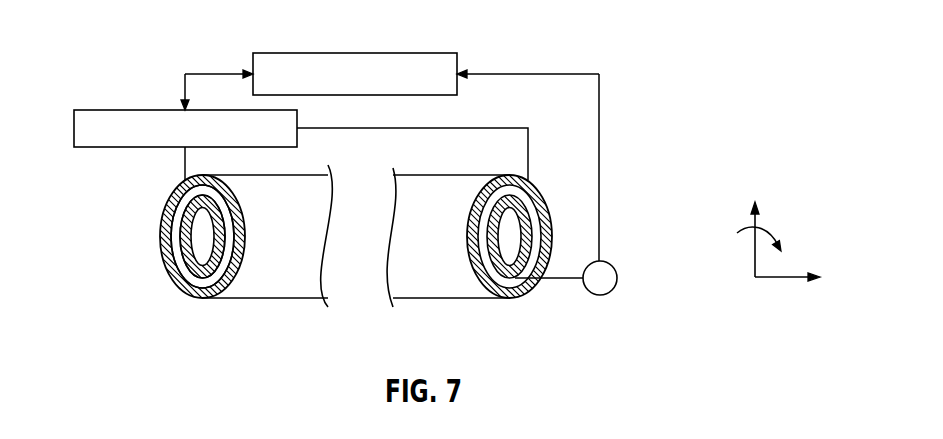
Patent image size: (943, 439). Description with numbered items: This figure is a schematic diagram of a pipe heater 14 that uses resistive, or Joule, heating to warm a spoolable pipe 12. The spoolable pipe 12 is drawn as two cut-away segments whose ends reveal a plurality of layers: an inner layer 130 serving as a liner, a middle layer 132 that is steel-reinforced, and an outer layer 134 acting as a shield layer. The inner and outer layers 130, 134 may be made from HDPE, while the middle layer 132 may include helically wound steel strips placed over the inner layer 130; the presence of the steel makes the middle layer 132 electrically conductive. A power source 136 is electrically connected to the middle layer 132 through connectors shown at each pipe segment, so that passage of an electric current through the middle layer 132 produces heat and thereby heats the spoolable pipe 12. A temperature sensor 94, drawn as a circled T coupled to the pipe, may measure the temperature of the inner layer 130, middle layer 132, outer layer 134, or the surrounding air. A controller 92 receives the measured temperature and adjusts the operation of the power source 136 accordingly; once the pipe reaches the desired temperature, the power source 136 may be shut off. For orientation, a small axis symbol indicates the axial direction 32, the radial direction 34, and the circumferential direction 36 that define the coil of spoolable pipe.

The spoolable pipe 12 is at (266, 300).
The pipe heater 14 is at (570, 28).
The axial axis or direction 32 is at (783, 279).
The radial axis or direction 34 is at (753, 253).
The circumferential axis or direction 36 is at (775, 227).
The controller 92 is at (298, 53).
The temperature sensor 94 is at (600, 296).
The inner layer 130 is at (166, 255).
The middle layer 132 is at (172, 238).
The outer layer 134 is at (159, 236).
The power source 136 is at (108, 110).